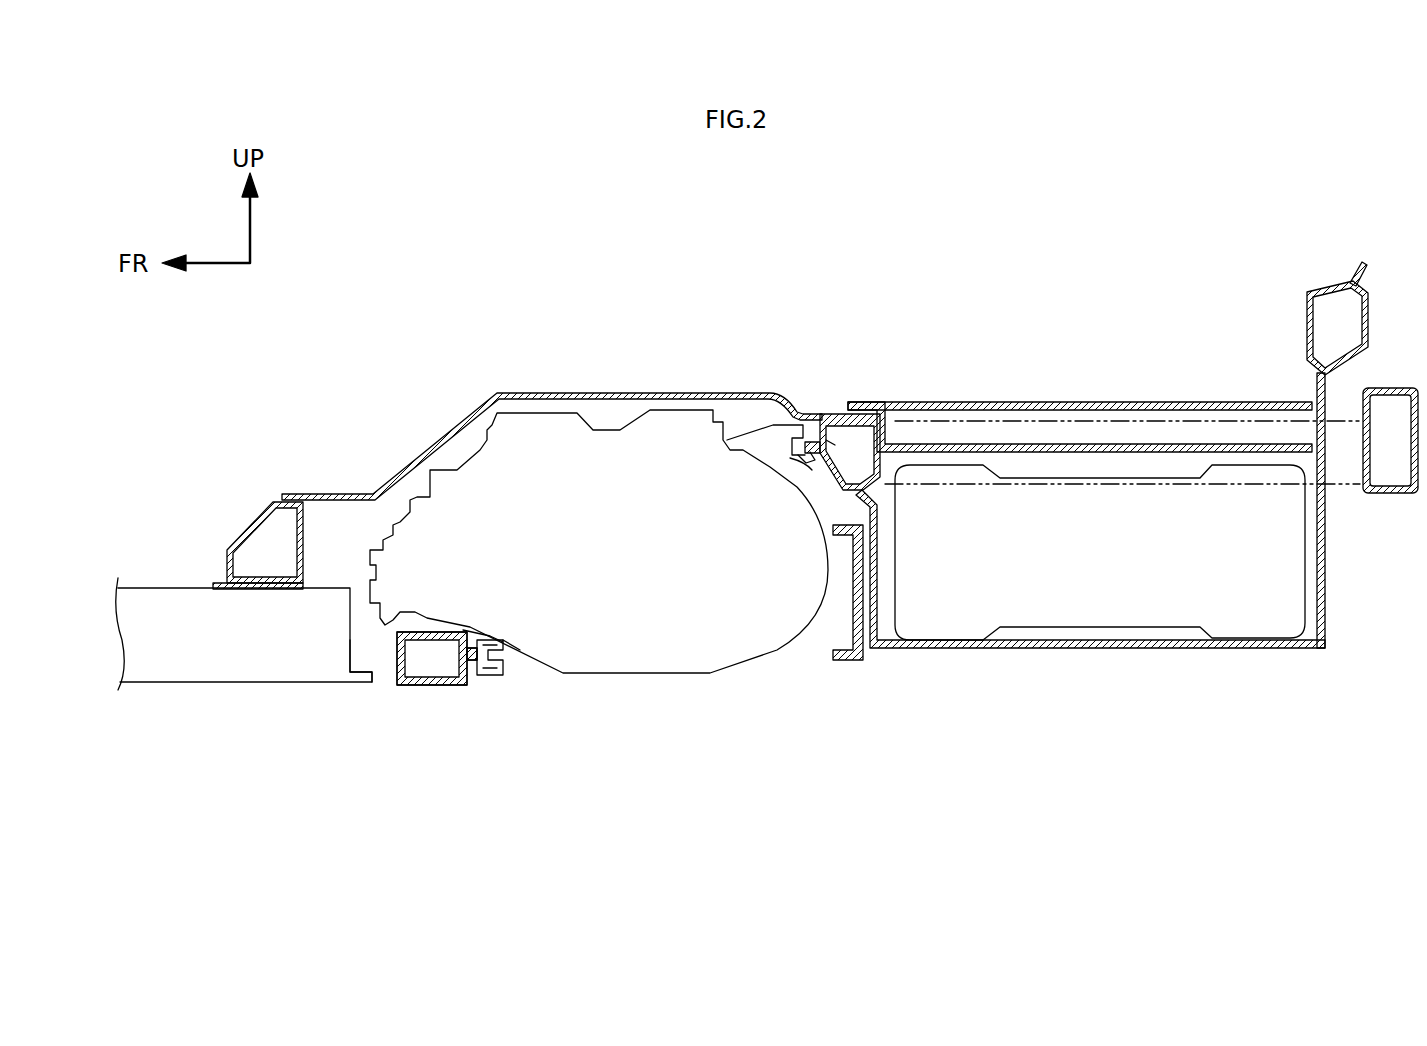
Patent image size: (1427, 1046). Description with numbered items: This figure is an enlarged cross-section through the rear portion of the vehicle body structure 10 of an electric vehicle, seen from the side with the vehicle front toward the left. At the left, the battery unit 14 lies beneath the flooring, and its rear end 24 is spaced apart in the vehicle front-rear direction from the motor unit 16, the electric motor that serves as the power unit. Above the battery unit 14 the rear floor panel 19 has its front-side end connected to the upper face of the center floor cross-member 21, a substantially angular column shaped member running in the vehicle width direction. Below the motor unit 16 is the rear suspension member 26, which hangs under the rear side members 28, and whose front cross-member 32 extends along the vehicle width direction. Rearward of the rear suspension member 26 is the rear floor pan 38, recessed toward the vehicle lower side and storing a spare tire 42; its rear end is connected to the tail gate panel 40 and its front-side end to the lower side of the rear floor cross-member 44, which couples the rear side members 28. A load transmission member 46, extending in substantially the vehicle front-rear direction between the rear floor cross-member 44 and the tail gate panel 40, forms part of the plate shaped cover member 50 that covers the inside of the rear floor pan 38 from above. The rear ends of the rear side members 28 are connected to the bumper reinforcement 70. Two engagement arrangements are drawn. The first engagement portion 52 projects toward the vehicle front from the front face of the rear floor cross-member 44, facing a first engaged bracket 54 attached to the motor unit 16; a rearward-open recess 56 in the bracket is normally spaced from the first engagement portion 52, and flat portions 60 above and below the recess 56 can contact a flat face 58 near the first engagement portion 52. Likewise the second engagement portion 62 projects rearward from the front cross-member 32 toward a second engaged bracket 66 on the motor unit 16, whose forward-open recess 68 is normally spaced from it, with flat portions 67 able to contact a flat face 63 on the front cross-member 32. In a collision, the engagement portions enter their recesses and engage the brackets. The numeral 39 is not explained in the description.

The vehicle body structure 10 is at (888, 328).
The battery unit 14 is at (203, 668).
The motor unit 16 is at (632, 662).
The rear floor panel 19 is at (600, 392).
The center floor cross-member 21 is at (258, 523).
The rear end 24 is at (333, 660).
The rear suspension member 26 is at (432, 658).
The rear side members 28 is at (1192, 418).
The front cross-member 32 is at (430, 688).
The rear floor pan 38 is at (921, 652).
The bracket 39 is at (862, 662).
The tail gate panel 40 is at (1327, 535).
The spare tire 42 is at (1110, 615).
The rear floor cross-member 44 is at (844, 418).
The load transmission member 46 is at (1018, 401).
The cover member 50 is at (880, 404).
The first engagement portion 52 is at (812, 464).
The first engaged bracket 54 is at (760, 434).
The recess 56 is at (800, 455).
The flat face 58 is at (805, 440).
The flat portion 60 is at (826, 440).
The second engagement portion 62 is at (470, 657).
The flat face 63 is at (480, 660).
The second engaged bracket 66 is at (520, 657).
The flat portion 67 is at (473, 648).
The recess 68 is at (510, 650).
The bumper reinforcement 70 is at (1390, 388).